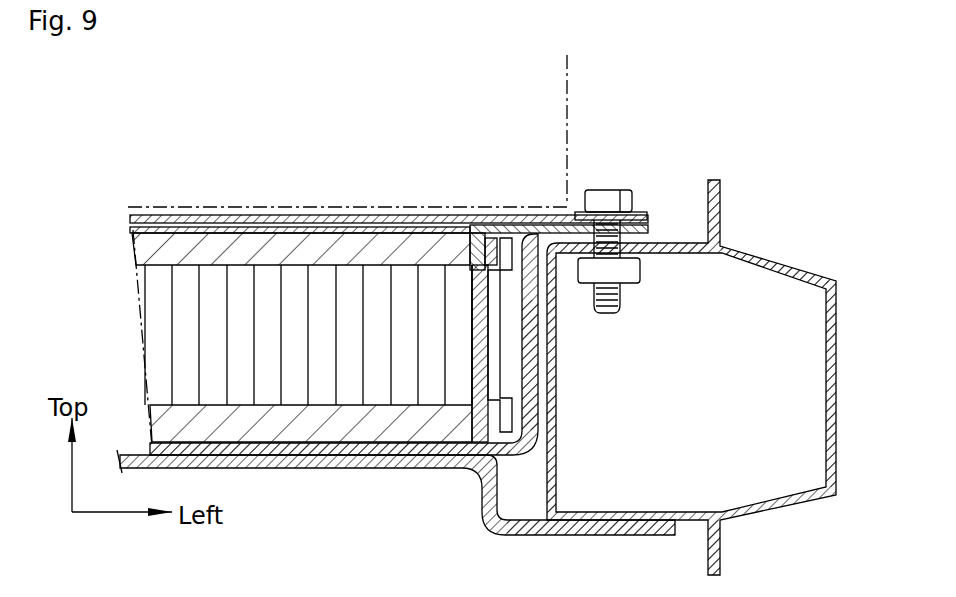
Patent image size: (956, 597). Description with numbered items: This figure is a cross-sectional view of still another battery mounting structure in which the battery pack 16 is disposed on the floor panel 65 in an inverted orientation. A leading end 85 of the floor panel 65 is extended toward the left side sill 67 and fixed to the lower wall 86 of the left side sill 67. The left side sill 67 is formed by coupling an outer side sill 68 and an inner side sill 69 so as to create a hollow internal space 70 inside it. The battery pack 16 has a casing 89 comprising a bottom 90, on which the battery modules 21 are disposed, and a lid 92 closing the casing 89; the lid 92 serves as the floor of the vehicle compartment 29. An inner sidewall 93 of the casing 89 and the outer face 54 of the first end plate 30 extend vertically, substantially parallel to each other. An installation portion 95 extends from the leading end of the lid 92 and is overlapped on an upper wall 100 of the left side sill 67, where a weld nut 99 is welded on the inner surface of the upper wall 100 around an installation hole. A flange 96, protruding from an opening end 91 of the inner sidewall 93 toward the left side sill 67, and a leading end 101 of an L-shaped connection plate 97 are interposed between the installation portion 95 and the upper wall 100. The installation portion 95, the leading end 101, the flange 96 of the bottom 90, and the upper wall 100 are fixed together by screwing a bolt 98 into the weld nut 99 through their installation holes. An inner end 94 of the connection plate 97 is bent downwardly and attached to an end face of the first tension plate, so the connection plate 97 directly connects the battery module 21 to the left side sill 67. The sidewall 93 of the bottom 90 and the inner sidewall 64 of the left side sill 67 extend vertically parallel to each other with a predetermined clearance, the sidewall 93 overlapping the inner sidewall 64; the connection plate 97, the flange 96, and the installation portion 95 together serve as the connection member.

The battery pack 16 is at (247, 160).
The battery module 21 is at (155, 300).
The vehicle compartment 29 is at (565, 103).
The first end plate 30 is at (482, 285).
The outer face 54 is at (507, 266).
The inner sidewall 64 is at (523, 370).
The floor panel 65 is at (396, 409).
The left side sill 67 is at (770, 248).
The outer side sill 68 is at (691, 346).
The inner side sill 69 is at (710, 198).
The hollow internal space 70 is at (830, 358).
The leading end 85 is at (588, 537).
The lower wall 86 is at (690, 522).
The casing 89 is at (385, 458).
The bottom 90 is at (262, 452).
The opening end 91 is at (492, 238).
The lid 92 is at (348, 216).
The inner sidewall 93 is at (523, 342).
The inner end 94 is at (478, 242).
The installation portion 95 is at (344, 324).
The flange 96 is at (566, 258).
The connection plate 97 is at (545, 228).
The bolt 98 is at (649, 224).
The weld nut 99 is at (632, 270).
The upper wall 100 is at (683, 245).
The leading end 101 is at (642, 222).